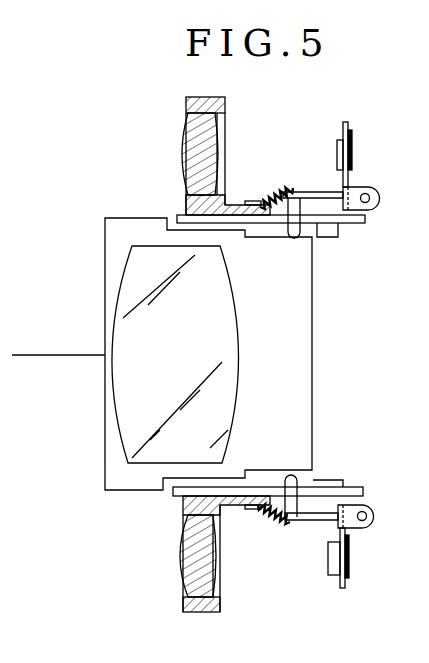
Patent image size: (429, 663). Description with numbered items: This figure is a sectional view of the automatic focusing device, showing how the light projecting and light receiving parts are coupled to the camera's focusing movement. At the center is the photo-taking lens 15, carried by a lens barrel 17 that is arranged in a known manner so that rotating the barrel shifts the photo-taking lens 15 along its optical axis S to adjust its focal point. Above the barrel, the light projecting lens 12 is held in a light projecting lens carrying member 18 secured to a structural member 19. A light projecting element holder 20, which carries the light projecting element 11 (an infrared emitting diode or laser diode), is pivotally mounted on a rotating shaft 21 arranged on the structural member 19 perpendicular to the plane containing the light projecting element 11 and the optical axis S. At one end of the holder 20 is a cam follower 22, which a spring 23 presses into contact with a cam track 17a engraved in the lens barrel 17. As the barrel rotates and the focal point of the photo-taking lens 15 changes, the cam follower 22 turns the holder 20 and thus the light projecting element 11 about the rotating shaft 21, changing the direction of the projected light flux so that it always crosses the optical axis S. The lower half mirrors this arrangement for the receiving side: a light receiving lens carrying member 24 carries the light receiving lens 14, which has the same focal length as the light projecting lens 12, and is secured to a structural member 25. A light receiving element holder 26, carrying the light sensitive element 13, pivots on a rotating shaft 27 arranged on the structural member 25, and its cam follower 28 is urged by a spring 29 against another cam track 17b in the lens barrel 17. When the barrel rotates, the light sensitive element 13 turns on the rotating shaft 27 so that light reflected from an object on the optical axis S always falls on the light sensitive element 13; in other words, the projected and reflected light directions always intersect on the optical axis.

The light projecting element 11 is at (336, 150).
The light projecting lens 12 is at (182, 155).
The light sensitive element 13 is at (330, 576).
The light receiving lens 14 is at (180, 577).
The photo-taking lens 15 is at (186, 326).
The lens barrel 17 is at (299, 324).
The cam track 17a is at (272, 238).
The cam track 17b is at (276, 486).
The light projecting lens carrying member 18 is at (226, 102).
The structural member 19 is at (343, 226).
The light projecting element holder 20 is at (349, 122).
The rotating shaft 21 is at (372, 185).
The cam follower 22 is at (303, 238).
The spring 23 is at (270, 188).
The light receiving lens carrying member 24 is at (217, 612).
The structural member 25 is at (176, 494).
The light receiving element holder 26 is at (343, 588).
The rotating shaft 27 is at (366, 529).
The cam follower 28 is at (298, 478).
The spring 29 is at (283, 527).
The optical axis S is at (58, 375).